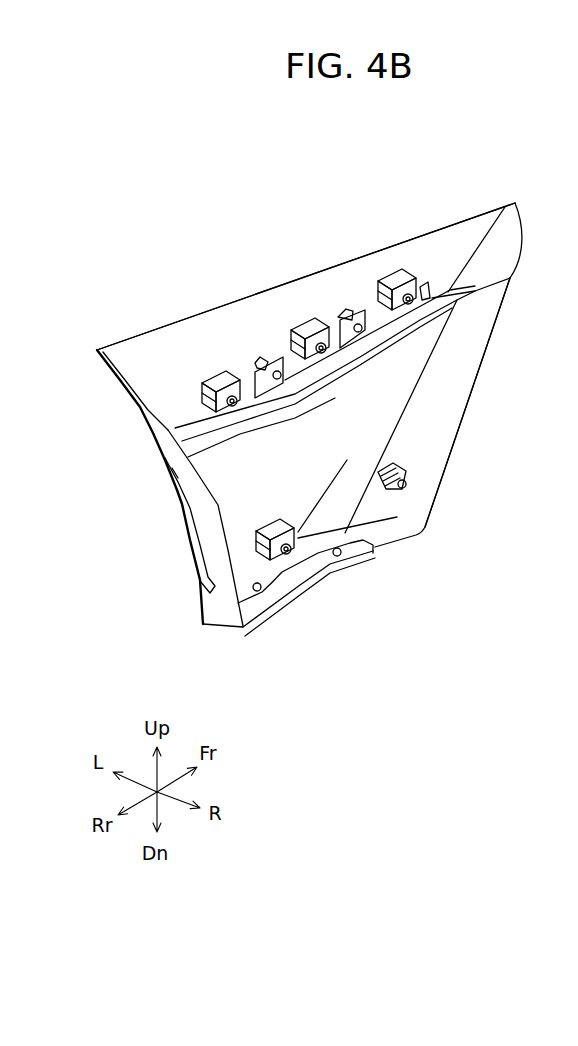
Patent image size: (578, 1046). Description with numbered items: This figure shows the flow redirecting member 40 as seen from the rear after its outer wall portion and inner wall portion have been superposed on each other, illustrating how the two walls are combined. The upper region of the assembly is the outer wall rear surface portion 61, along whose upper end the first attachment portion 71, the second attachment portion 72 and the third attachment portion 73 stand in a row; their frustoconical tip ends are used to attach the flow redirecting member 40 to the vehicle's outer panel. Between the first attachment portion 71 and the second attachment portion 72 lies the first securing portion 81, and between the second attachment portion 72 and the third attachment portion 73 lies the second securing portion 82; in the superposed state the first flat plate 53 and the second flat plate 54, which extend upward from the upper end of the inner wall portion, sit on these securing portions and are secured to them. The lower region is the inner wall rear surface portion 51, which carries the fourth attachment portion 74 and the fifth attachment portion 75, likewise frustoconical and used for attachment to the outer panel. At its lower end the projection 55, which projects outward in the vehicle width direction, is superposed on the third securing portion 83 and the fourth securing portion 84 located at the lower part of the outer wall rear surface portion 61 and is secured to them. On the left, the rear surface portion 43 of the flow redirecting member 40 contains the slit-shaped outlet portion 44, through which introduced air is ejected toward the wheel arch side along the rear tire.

The flow redirecting member 40 is at (192, 176).
The outer wall rear surface portion 61 is at (150, 355).
The inner wall rear surface portion 51 is at (443, 420).
The first flat plate 53 is at (257, 382).
The outlet portion 44 is at (197, 534).
The rear surface portion 43 is at (215, 610).
The projection 55 is at (325, 575).
The first attachment portion 71 is at (232, 372).
The second attachment portion 72 is at (320, 322).
The third attachment portion 73 is at (410, 268).
The fourth attachment portion 74 is at (291, 563).
The fifth attachment portion 75 is at (403, 489).
The first securing portion 81 is at (277, 360).
The second flat plate 54 is at (343, 308).
The second securing portion 82 is at (360, 308).
The third securing portion 83 is at (258, 592).
The fourth securing portion 84 is at (360, 558).